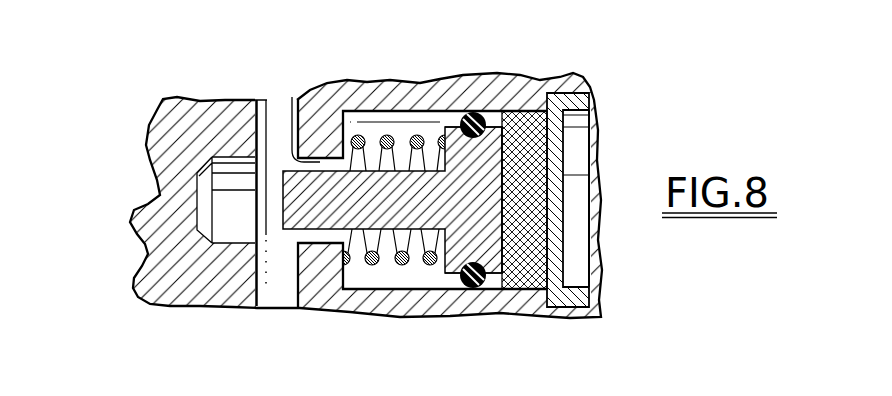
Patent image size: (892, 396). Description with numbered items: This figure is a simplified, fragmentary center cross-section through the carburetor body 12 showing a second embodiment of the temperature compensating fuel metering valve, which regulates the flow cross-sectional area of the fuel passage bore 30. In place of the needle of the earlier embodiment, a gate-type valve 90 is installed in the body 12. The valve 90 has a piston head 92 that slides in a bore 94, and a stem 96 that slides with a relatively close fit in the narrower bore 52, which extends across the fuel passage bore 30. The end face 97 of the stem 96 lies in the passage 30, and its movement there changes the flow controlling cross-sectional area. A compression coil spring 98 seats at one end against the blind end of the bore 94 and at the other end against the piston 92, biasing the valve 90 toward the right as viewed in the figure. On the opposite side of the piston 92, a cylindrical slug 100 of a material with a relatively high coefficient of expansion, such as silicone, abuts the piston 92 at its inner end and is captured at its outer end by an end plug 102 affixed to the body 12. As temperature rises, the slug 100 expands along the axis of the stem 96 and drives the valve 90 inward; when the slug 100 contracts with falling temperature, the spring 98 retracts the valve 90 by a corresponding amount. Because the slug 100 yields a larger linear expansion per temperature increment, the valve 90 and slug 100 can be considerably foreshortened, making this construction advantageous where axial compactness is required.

The body 12 is at (192, 275).
The fuel passage bore 30 is at (267, 104).
The bore 52 is at (293, 96).
The gate-type valve 90 is at (443, 110).
The piston head 92 is at (475, 110).
The bore 94 is at (395, 109).
The stem 96 is at (290, 231).
The end face 97 is at (283, 205).
The compression coil spring 98 is at (389, 272).
The cylindrical slug 100 is at (520, 262).
The end plug 102 is at (564, 163).